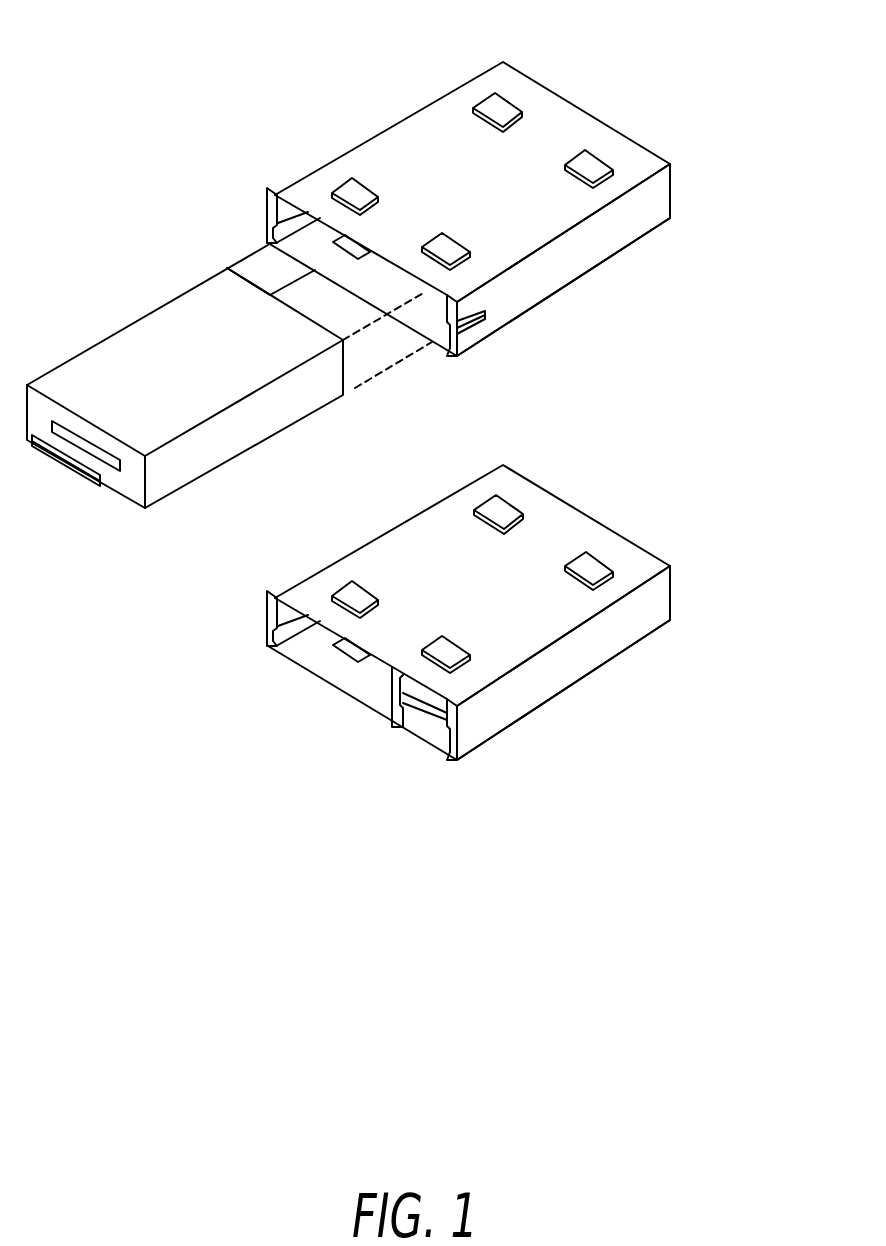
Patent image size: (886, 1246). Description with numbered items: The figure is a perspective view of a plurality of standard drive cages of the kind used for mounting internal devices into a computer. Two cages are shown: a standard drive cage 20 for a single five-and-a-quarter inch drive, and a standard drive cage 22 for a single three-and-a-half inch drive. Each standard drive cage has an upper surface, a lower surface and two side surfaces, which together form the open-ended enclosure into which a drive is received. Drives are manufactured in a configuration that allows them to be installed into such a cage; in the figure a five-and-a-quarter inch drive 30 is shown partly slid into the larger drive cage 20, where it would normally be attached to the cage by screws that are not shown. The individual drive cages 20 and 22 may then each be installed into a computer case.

The standard drive cage for a single 5¼ inch drive 20 is at (371, 72).
The standard drive cage for a single 3½ inch drive 22 is at (748, 563).
The 5¼ inch drive 30 is at (215, 445).